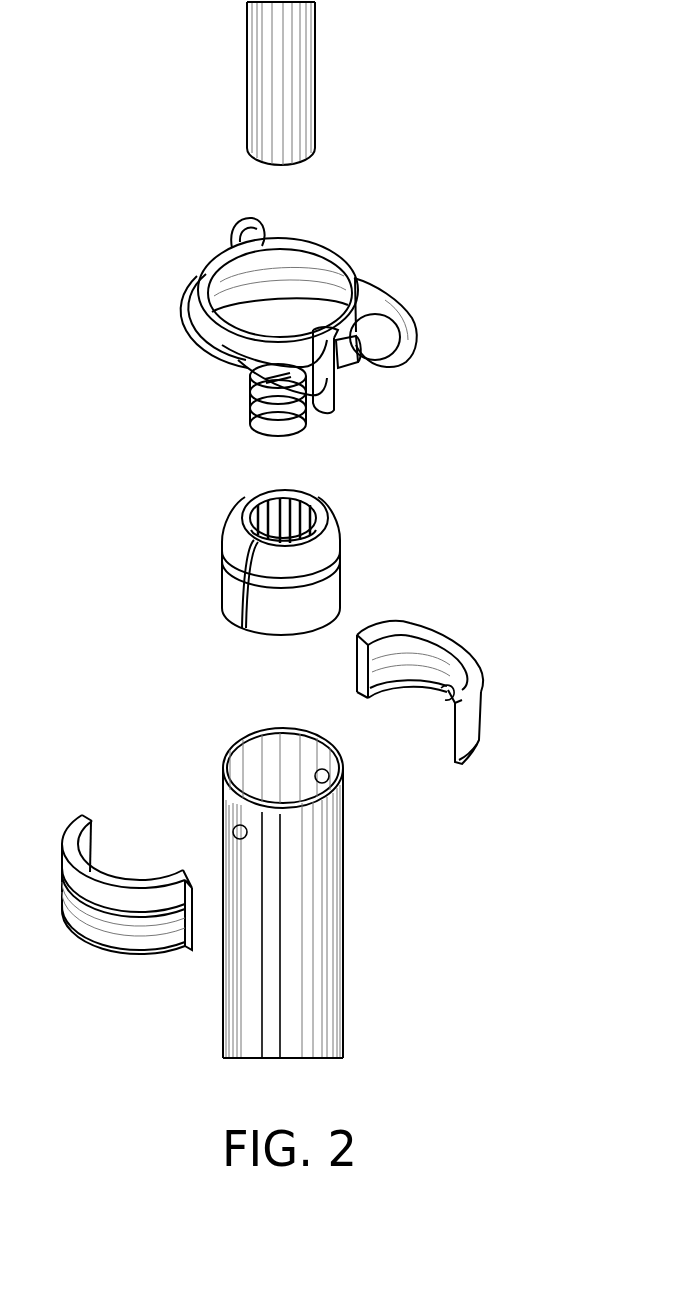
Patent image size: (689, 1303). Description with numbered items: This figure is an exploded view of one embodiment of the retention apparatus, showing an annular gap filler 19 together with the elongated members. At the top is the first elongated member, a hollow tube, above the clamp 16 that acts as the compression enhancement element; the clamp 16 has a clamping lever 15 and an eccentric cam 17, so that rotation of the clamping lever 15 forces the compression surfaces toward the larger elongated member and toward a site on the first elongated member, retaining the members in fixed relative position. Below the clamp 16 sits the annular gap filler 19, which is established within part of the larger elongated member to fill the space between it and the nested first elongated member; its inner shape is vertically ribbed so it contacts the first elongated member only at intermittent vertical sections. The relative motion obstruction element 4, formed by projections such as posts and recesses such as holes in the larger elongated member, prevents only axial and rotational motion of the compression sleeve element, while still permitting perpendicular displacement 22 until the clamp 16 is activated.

The clamping lever 15 is at (203, 343).
The clamp 16 is at (329, 219).
The eccentric cam 17 is at (279, 362).
The annular gap filler 19 is at (222, 562).
The perpendicular displacement 22 is at (268, 866).
The relative motion obstruction element 4 is at (446, 690).